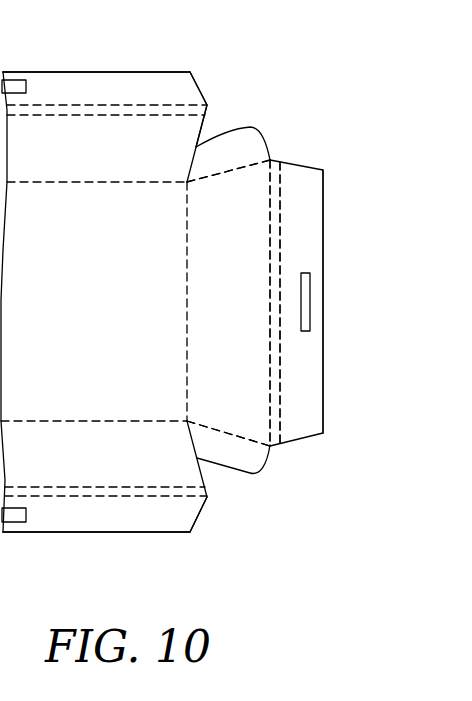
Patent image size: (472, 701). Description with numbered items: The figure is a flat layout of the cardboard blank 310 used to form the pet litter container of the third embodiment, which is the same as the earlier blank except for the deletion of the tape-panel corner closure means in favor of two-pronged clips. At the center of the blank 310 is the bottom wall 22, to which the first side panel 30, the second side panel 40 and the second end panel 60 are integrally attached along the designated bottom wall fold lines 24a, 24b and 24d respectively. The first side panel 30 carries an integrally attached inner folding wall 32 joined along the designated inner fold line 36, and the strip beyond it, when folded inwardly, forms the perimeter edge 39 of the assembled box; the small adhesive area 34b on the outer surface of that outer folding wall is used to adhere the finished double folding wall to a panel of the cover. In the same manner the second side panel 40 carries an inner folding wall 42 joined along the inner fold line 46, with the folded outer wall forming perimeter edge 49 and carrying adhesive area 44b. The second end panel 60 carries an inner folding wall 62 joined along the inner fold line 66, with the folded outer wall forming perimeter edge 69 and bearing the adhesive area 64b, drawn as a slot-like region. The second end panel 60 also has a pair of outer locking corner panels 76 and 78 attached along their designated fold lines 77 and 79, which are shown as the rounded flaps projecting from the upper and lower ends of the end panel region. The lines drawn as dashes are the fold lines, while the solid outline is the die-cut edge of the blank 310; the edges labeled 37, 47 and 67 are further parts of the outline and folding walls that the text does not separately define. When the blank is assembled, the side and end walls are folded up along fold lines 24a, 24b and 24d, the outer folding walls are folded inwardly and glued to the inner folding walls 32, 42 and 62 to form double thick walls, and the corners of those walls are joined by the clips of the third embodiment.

The bottom wall 22 is at (13, 325).
The bottom wall fold line 24a is at (128, 183).
The bottom wall fold line 24b is at (88, 420).
The bottom wall fold line 24d is at (185, 325).
The first side panel 30 is at (133, 143).
The inner folding wall 32 is at (42, 87).
The adhesive area 34b is at (14, 85).
The inner fold line 36 is at (146, 108).
The angled edge 37 is at (162, 108).
The perimeter edge 39 is at (102, 73).
The second side panel 40 is at (18, 458).
The inner folding wall 42 is at (115, 518).
The adhesive area 44b is at (10, 522).
The inner fold line 46 is at (103, 497).
The fold line 47 is at (153, 493).
The perimeter edge 49 is at (128, 534).
The second end panel 60 is at (237, 315).
The inner folding wall 62 is at (293, 223).
The adhesive area 64b is at (305, 282).
The inner fold line 66 is at (271, 232).
The fold line 67 is at (275, 249).
The perimeter edge 69 is at (323, 304).
The outer locking corner panel 76 is at (228, 134).
The fold line 77 is at (205, 178).
The outer locking corner panel 78 is at (218, 457).
The fold line 79 is at (245, 435).
The cardboard blank 310 is at (310, 158).